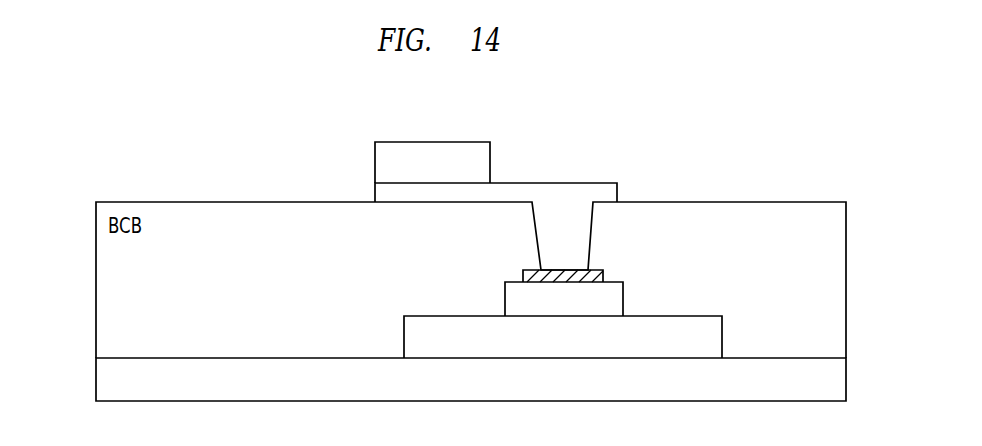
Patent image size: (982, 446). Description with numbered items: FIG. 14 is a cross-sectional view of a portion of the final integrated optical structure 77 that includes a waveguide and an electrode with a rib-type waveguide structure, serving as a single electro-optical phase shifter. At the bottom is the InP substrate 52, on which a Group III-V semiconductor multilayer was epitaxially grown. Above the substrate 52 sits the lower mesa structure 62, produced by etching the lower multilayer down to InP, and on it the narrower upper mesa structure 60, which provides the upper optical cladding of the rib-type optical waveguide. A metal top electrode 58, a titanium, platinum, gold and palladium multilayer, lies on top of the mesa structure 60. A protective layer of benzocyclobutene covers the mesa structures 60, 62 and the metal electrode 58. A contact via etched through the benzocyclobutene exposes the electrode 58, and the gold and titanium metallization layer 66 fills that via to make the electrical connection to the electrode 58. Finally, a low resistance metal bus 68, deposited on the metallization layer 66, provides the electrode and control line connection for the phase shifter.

The InP substrate 52 is at (849, 363).
The metal top electrode 58 is at (598, 271).
The mesa structure 60 is at (623, 299).
The lower mesa structure 62 is at (723, 342).
The metallization layer 66 is at (567, 183).
The metal bus 68 is at (491, 151).
The final integrated optical structure 77 is at (68, 338).